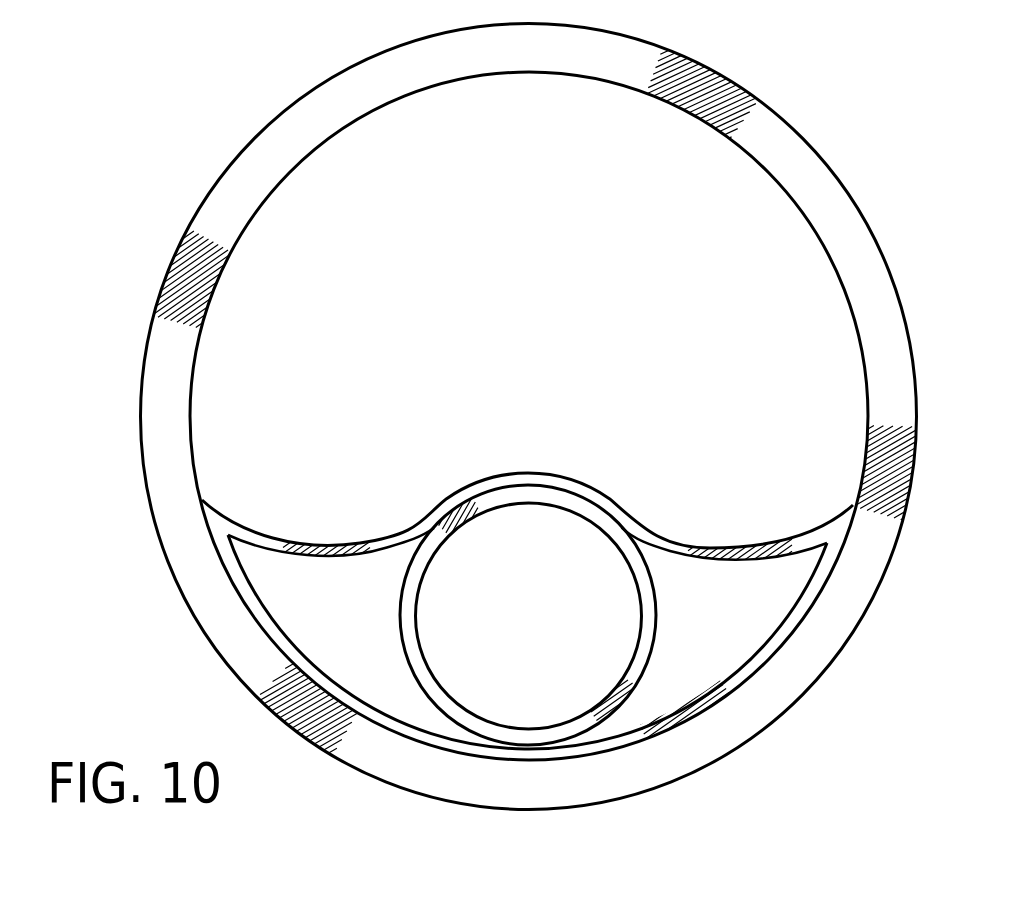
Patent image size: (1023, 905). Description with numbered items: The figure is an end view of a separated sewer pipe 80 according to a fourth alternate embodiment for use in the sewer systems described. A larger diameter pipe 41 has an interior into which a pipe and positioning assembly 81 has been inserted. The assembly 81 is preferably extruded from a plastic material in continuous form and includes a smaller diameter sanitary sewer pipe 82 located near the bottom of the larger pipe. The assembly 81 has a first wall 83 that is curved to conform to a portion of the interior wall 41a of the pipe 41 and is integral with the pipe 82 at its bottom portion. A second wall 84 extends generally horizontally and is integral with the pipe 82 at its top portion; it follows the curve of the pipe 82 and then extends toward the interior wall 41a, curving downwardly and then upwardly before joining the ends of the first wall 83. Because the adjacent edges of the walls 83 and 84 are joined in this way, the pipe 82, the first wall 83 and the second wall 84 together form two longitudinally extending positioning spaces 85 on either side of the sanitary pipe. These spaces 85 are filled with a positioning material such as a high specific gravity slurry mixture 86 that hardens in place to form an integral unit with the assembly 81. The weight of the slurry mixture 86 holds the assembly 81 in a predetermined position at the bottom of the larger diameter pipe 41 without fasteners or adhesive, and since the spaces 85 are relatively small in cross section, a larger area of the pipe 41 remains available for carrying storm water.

The larger diameter pipe 41 is at (767, 138).
The interior wall of the pipe 41a is at (248, 223).
The separated sewer pipe 80 is at (926, 180).
The pipe and positioning assembly 81 is at (645, 490).
The smaller diameter sanitary sewer pipe 82 is at (655, 598).
The first wall 83 is at (667, 720).
The second wall 84 is at (788, 548).
The positioning spaces 85 is at (300, 647).
The slurry mixture 86 is at (363, 623).